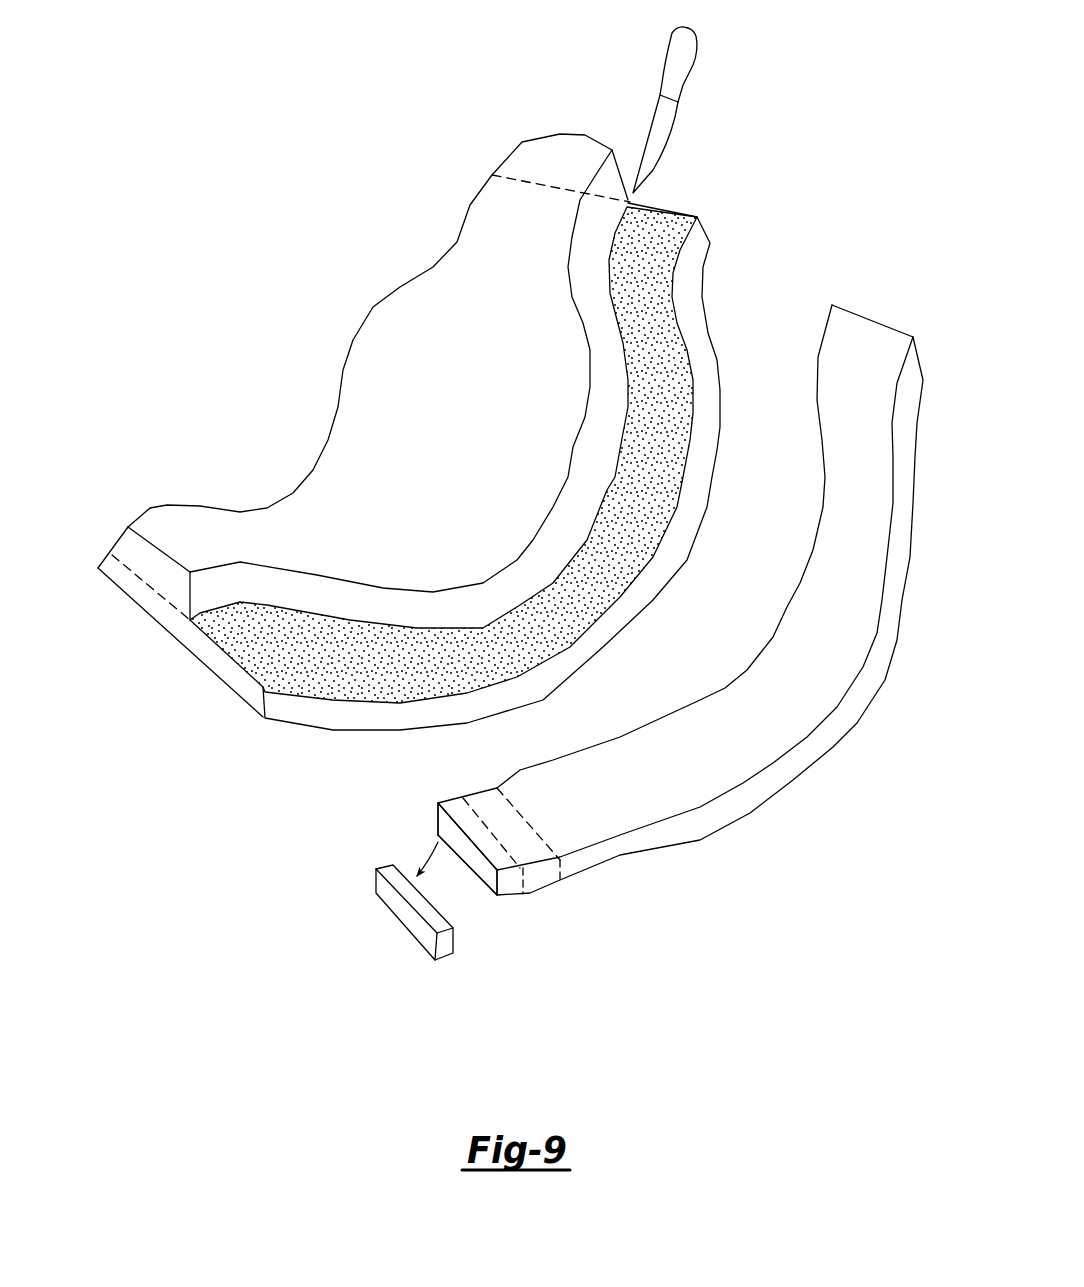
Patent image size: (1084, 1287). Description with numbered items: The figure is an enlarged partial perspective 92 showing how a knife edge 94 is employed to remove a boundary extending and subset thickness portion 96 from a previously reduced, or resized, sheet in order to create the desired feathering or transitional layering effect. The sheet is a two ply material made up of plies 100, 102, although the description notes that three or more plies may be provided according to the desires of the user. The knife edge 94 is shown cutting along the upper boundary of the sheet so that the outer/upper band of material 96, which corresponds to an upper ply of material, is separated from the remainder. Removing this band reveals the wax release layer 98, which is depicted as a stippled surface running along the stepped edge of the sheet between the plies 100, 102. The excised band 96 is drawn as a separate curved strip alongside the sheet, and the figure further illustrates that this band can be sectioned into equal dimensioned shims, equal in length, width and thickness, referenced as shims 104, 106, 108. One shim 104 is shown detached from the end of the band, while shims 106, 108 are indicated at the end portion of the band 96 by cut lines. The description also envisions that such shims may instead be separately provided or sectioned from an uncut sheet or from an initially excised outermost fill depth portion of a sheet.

The enlarged partial perspective 92 is at (455, 432).
The knife edge 94 is at (673, 68).
The boundary extending and subset thickness portion 96 is at (680, 630).
The wax release layer 98 is at (638, 547).
The ply 100 is at (168, 617).
The ply 102 is at (157, 560).
The shim 104 is at (445, 947).
The shim 106 is at (508, 888).
The shim 108 is at (552, 878).